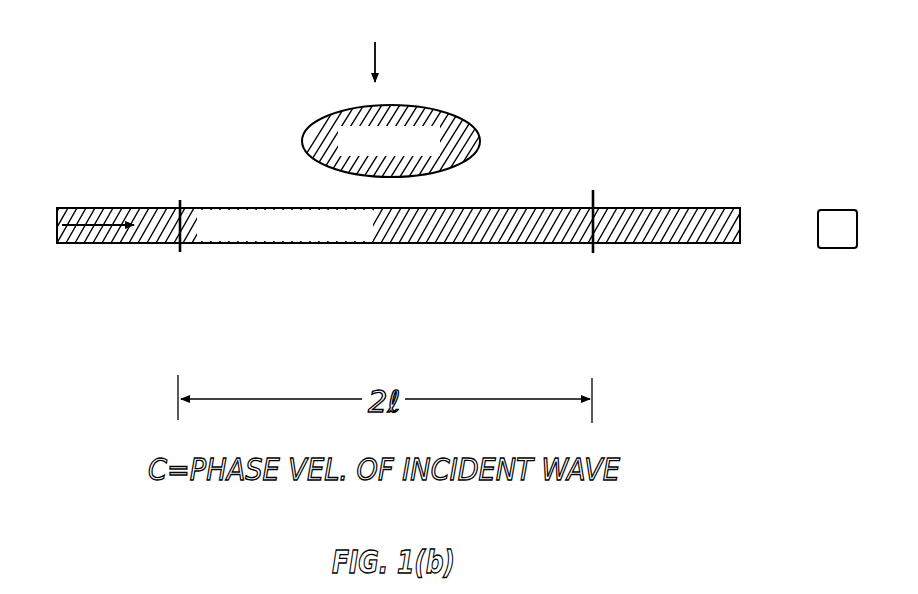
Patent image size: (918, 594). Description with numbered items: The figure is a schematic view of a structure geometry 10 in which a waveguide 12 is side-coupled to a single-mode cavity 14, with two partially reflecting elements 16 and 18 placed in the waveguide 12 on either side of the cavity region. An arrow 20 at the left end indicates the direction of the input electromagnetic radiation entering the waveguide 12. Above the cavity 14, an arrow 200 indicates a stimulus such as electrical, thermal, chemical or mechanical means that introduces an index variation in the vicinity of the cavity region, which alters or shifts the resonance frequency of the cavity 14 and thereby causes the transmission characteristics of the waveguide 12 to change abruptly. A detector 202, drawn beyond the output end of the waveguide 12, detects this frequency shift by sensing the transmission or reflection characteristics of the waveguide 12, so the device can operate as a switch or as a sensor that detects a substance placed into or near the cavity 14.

The structure geometry 10 is at (560, 45).
The waveguide 12 is at (683, 208).
The single-mode cavity 14 is at (340, 112).
The partially reflecting element 16 is at (180, 200).
The partially reflecting element 18 is at (593, 195).
The arrow 20 is at (95, 228).
The arrow 200 is at (378, 43).
The detector 202 is at (838, 210).